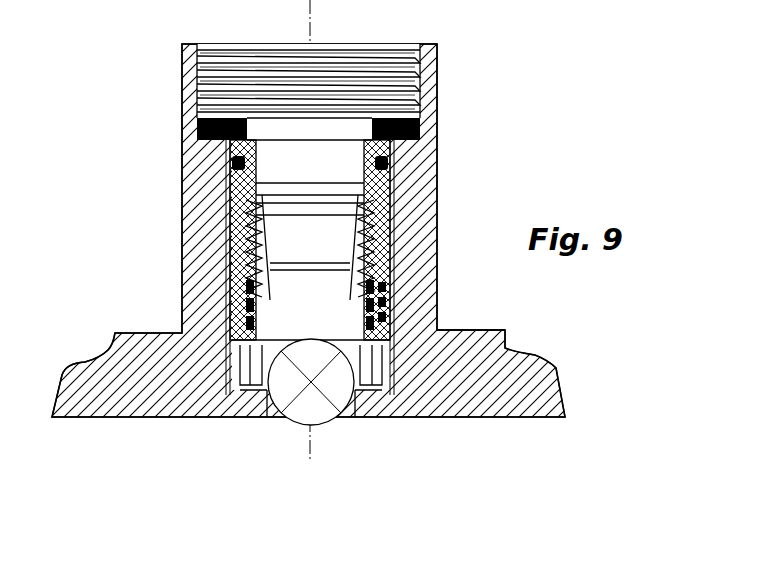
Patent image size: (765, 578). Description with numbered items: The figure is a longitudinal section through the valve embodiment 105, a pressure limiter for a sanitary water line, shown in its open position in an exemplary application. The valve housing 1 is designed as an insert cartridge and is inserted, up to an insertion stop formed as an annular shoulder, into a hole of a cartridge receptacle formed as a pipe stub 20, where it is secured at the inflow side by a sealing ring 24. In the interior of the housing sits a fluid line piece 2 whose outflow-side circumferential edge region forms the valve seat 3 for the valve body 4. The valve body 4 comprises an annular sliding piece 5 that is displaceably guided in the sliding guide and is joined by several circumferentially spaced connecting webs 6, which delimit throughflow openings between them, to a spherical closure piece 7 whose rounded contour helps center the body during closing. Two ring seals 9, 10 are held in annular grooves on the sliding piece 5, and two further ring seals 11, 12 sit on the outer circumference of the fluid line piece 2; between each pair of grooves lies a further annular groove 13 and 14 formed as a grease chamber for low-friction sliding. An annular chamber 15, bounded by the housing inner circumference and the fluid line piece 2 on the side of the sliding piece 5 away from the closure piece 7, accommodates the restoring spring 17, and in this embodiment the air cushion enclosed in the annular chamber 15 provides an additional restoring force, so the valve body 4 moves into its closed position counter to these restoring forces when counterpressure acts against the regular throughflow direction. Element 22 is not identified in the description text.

The valve embodiment 105 is at (222, 205).
The sealing ring 24 is at (400, 106).
The cap ring 22 is at (398, 158).
The pipe stub 20 is at (420, 183).
The valve housing 1 is at (392, 215).
The restoring spring 17 is at (394, 240).
The sliding piece 5 is at (392, 286).
The ring seal 9 is at (392, 300).
The annular groove 14 is at (392, 317).
The ring seal 10 is at (455, 334).
The fluid line piece 2 is at (268, 238).
The annular chamber 15 is at (364, 206).
The ring seal 11 is at (362, 288).
The annular groove 13 is at (364, 304).
The ring seal 12 is at (364, 322).
The valve seat 3 is at (346, 345).
The closure piece 7 is at (320, 422).
The connecting webs 6 is at (255, 400).
The valve body 4 is at (283, 435).